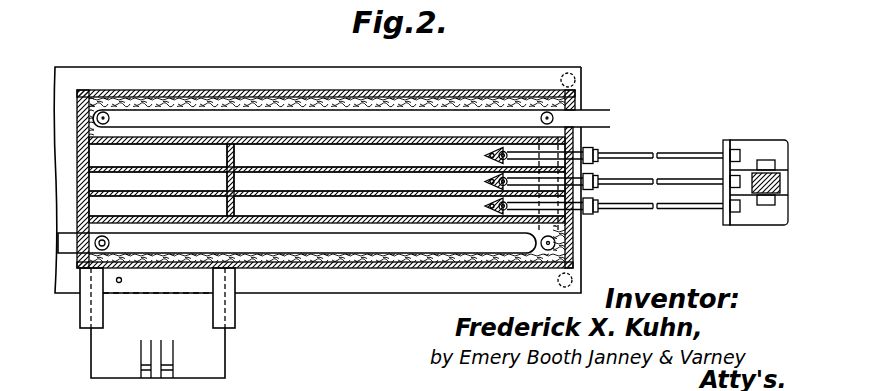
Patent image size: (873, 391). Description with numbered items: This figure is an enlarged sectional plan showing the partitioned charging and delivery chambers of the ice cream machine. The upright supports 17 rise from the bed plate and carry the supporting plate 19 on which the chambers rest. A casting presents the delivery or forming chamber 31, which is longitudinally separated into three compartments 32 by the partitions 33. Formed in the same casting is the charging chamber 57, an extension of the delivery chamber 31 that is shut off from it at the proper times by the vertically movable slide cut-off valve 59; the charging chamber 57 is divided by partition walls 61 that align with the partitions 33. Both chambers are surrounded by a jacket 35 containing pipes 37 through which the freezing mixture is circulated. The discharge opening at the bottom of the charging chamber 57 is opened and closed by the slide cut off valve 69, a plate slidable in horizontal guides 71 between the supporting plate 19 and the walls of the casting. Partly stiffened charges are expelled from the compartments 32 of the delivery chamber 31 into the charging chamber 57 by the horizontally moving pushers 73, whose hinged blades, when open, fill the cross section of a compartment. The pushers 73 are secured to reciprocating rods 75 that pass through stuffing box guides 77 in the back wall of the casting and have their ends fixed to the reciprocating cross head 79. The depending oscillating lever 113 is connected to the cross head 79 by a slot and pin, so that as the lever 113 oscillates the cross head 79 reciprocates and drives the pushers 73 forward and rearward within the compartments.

The upright supports 17 is at (578, 79).
The supporting plate 19 is at (470, 78).
The delivery chamber casting 31 is at (413, 137).
The compartment 32 is at (399, 181).
The partitions 33 is at (380, 175).
The jacket 35 is at (246, 90).
The pipes 37 is at (325, 110).
The charging chamber 57 is at (158, 181).
The slide cut-off valve 59 is at (237, 183).
The partition walls 61 is at (140, 176).
The cut off valve 69 is at (220, 343).
The horizontal guides 71 is at (82, 310).
The pushers 73 is at (484, 155).
The reciprocating rods 75 is at (668, 152).
The stuffing box guides 77 is at (598, 153).
The cross head 79 is at (731, 146).
The oscillating lever 113 is at (765, 194).